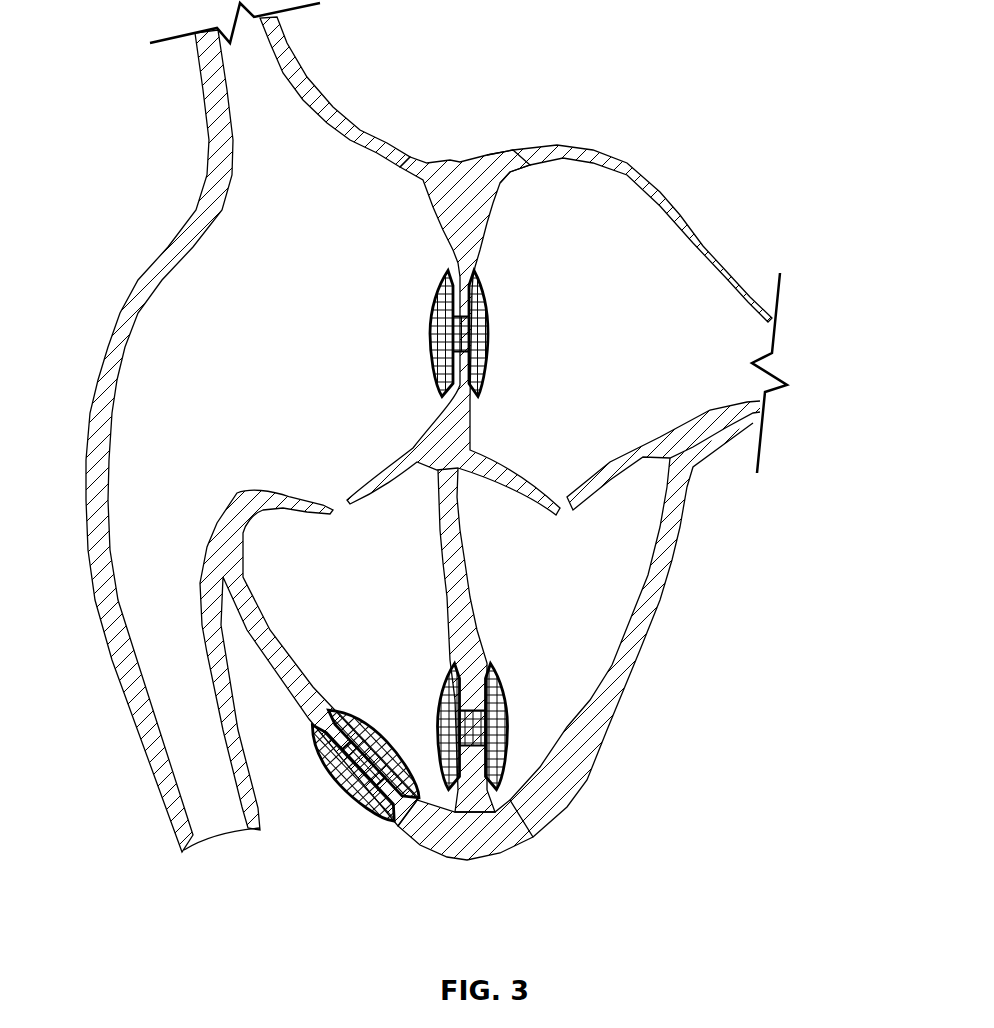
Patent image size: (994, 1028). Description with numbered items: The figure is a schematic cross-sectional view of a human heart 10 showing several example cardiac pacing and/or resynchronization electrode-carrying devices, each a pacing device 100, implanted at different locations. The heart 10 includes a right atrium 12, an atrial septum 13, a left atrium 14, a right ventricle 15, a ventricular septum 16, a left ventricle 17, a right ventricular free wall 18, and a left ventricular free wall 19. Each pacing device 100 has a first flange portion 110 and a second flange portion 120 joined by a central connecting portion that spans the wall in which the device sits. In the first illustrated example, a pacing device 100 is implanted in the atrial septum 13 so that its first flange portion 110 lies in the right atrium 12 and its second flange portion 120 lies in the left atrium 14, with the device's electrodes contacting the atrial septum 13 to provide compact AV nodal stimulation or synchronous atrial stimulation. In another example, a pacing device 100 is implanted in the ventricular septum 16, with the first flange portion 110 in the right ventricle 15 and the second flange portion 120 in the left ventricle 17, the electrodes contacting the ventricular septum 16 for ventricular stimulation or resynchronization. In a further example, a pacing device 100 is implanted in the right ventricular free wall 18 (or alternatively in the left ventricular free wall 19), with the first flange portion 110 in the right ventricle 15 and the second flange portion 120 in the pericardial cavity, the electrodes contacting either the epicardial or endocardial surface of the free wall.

The heart 10 is at (652, 91).
The right atrium 12 is at (292, 349).
The atrial septum 13 is at (453, 257).
The left atrium 14 is at (612, 359).
The right ventricle 15 is at (337, 589).
The ventricular septum 16 is at (449, 615).
The left ventricle 17 is at (579, 583).
The right ventricular free wall 18 is at (407, 824).
The left ventricular free wall 19 is at (606, 733).
The pacing device 100 is at (441, 548).
The first flange portion 110 is at (438, 308).
The second flange portion 120 is at (488, 316).